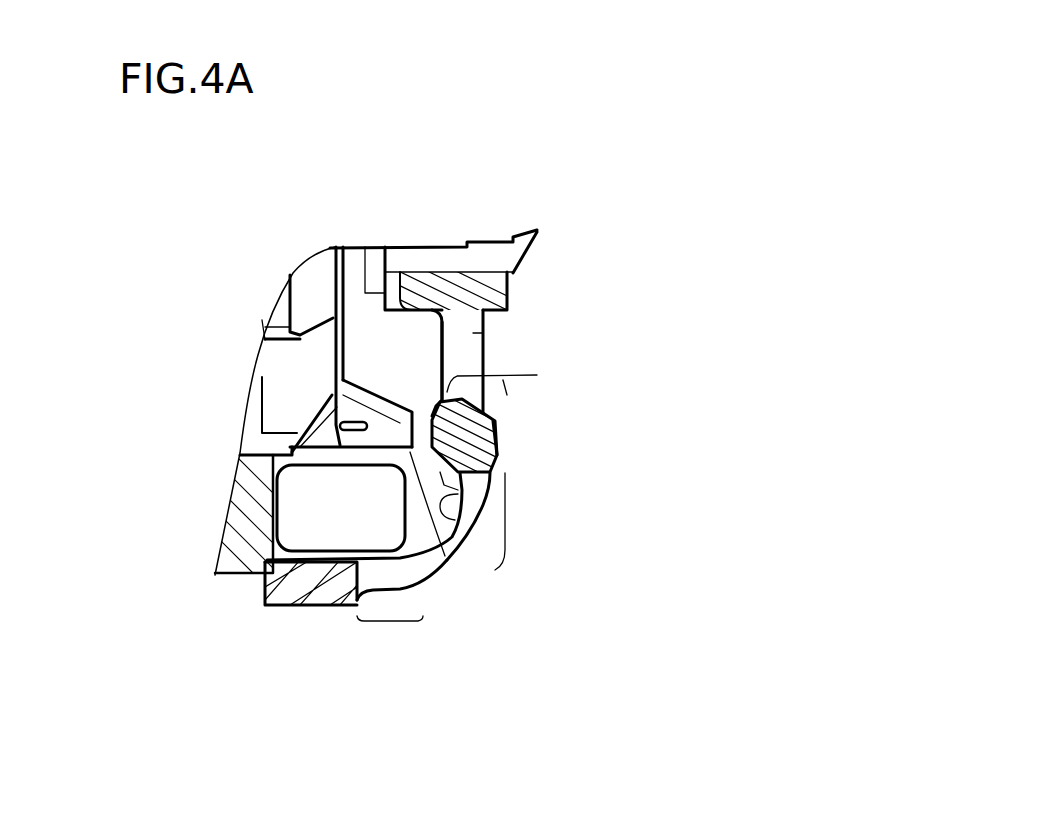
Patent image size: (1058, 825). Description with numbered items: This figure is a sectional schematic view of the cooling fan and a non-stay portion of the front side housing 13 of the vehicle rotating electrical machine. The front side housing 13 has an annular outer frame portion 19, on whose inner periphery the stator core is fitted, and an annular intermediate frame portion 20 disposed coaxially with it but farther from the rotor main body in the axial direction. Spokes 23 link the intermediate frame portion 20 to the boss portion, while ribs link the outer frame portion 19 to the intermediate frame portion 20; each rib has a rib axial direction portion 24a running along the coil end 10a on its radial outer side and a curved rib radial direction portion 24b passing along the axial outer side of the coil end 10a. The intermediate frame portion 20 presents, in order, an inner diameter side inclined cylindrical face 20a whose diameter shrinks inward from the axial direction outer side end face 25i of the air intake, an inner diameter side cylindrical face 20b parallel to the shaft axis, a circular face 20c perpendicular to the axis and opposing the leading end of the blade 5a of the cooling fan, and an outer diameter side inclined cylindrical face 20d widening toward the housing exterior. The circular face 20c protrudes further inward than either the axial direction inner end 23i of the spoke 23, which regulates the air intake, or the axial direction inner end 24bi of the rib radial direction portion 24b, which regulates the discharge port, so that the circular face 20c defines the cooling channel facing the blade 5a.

The front side housing 13 is at (552, 244).
The spoke 23 is at (500, 334).
The axial direction inner end of the spoke 23i is at (440, 365).
The axial direction outer side end face of the air intake 25i is at (483, 353).
The intermediate frame portion 20 is at (487, 442).
The inner diameter side inclined cylindrical face 20a is at (487, 413).
The inner diameter side cylindrical face 20b is at (522, 372).
The circular face 20c is at (416, 445).
The outer diameter side inclined cylindrical face 20d is at (467, 493).
The rib axial direction portion 24a is at (388, 635).
The rib radial direction portion 24b is at (513, 574).
The axial direction inner end of the rib radial direction portion 24bi is at (442, 490).
The blade 5a is at (373, 405).
The outer frame portion 19 is at (265, 585).
The coil end 10a is at (332, 522).